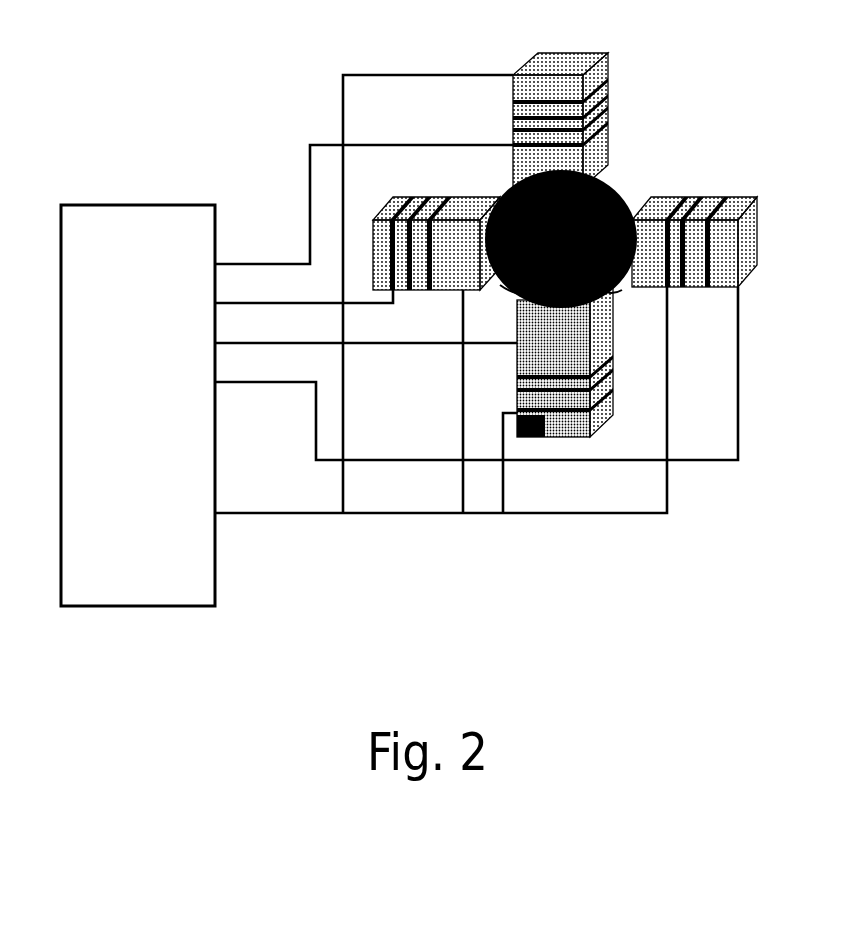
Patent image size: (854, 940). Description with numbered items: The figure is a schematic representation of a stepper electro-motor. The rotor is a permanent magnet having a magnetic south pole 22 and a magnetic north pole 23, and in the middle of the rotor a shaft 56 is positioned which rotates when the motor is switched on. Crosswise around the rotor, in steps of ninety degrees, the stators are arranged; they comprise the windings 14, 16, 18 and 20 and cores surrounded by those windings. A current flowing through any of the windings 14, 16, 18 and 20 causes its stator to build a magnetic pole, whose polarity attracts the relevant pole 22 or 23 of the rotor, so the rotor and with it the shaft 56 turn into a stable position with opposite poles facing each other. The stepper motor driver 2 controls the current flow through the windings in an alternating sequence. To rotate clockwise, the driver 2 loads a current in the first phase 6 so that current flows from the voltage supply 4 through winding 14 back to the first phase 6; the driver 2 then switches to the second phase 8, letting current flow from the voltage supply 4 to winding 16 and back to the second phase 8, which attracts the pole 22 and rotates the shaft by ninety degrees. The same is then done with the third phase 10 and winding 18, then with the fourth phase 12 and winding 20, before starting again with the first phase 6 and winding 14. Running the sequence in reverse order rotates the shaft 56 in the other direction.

The stepper motor driver 2 is at (75, 207).
The voltage supply 4 is at (325, 515).
The first phase 6 is at (237, 384).
The second phase 8 is at (237, 344).
The third phase 10 is at (237, 304).
The fourth phase 12 is at (239, 262).
The winding 14 is at (713, 190).
The winding 16 is at (620, 368).
The winding 18 is at (418, 188).
The winding 20 is at (608, 87).
The magnetic south pole 22 is at (607, 168).
The magnetic north pole 23 is at (508, 300).
The shaft 56 is at (608, 302).